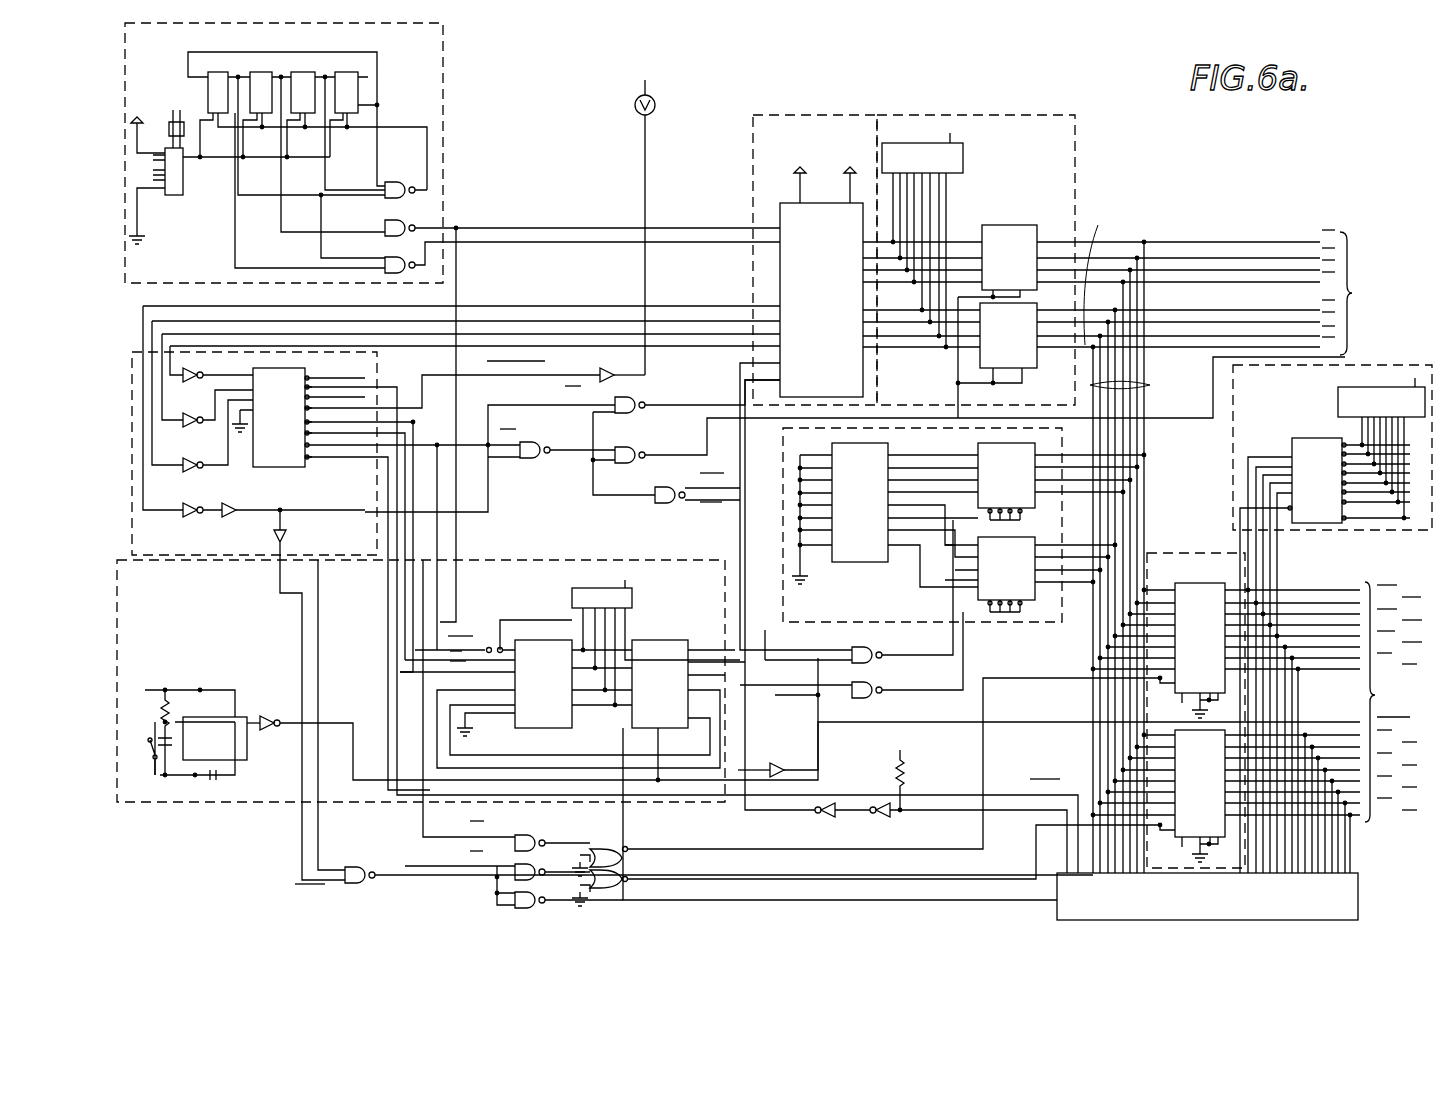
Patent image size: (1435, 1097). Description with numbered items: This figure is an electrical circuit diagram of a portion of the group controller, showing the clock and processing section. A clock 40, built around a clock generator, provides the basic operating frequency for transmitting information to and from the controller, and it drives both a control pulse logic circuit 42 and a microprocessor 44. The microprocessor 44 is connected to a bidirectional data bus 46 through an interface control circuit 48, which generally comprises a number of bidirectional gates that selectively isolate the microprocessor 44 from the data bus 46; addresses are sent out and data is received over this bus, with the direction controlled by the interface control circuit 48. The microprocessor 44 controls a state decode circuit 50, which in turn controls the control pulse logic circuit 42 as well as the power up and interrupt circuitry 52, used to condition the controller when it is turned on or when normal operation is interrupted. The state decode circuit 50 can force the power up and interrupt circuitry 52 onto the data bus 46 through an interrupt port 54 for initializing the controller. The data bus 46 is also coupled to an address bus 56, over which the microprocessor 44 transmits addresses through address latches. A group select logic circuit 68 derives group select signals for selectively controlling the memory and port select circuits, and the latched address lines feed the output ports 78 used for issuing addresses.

The clock 40 is at (425, 57).
The control pulse logic circuit 42 is at (580, 533).
The microprocessor 44 is at (781, 151).
The data bus 46 is at (1158, 385).
The interface control circuit 48 is at (1027, 187).
The state decode circuit 50 is at (244, 553).
The power up and interrupt circuitry 52 is at (237, 614).
The interrupt port 54 is at (870, 619).
The address bus 56 is at (1354, 708).
The group select logic circuit 68 is at (1267, 433).
The output ports 78 is at (1168, 710).